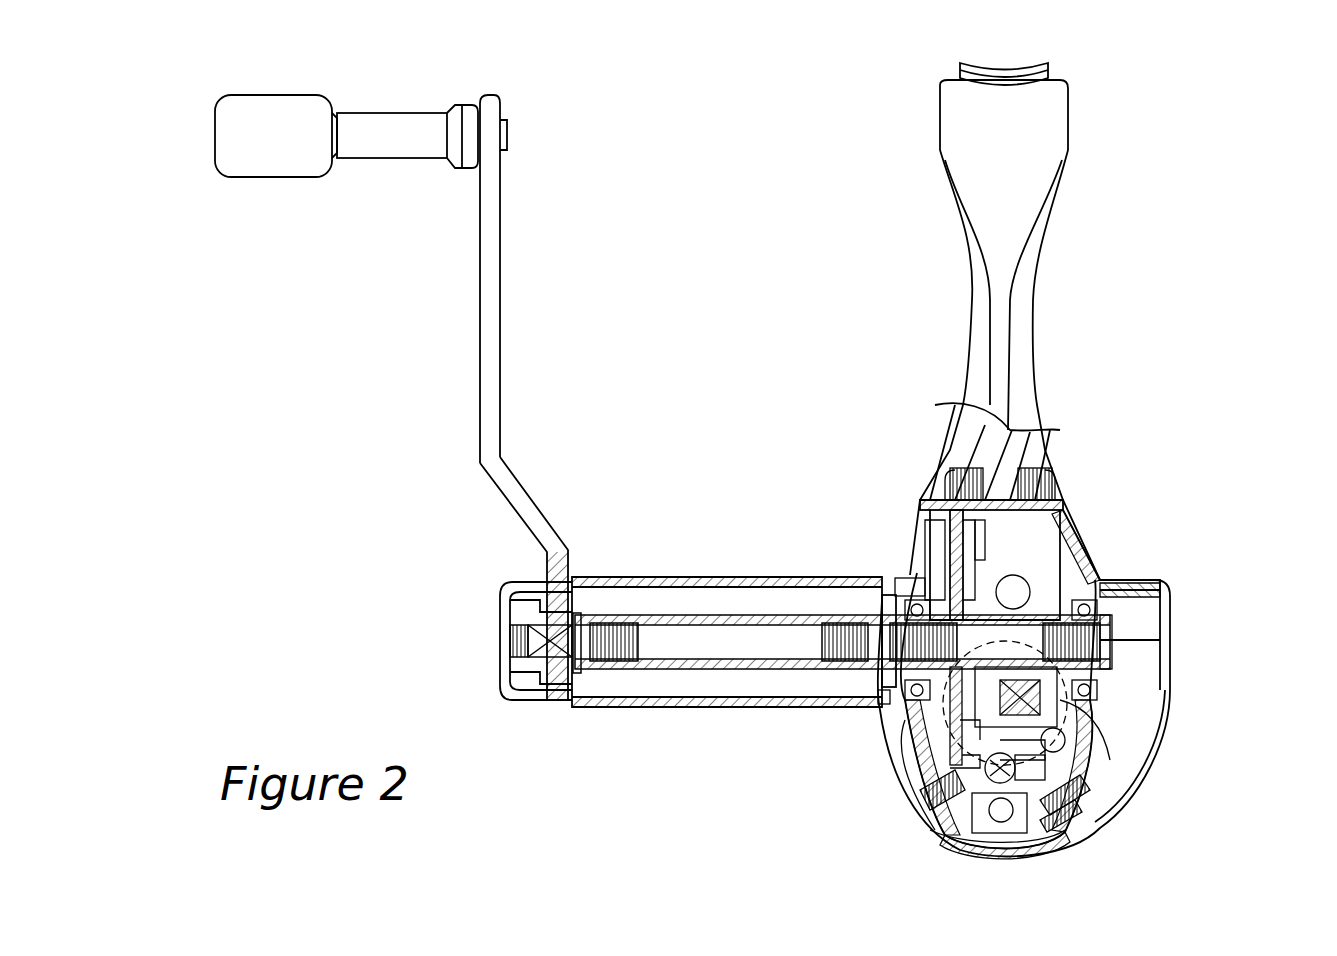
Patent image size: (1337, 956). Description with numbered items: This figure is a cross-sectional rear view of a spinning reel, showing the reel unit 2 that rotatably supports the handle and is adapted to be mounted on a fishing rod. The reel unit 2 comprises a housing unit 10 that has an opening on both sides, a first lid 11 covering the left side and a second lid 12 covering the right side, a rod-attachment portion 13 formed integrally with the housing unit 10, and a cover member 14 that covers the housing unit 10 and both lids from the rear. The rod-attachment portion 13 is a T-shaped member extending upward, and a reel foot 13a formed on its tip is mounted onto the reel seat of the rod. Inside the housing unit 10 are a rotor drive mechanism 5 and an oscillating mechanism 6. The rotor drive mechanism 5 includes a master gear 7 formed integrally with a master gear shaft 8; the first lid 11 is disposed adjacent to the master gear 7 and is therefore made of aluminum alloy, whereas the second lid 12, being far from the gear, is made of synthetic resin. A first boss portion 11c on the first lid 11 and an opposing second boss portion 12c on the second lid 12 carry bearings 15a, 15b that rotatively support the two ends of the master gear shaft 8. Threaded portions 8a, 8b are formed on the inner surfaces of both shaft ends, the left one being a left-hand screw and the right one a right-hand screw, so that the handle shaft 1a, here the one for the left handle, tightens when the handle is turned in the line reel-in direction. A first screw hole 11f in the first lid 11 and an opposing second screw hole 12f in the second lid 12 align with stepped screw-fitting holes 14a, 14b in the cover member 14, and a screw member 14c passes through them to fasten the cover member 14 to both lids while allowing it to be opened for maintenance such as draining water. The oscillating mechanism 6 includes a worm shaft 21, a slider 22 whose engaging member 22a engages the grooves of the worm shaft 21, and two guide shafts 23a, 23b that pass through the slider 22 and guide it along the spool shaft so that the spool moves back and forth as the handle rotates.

The handle shaft 1a is at (690, 615).
The reel unit 2 is at (1047, 382).
The rotor drive mechanism 5 is at (925, 525).
The oscillating mechanism 6 is at (1095, 758).
The master gear 7 is at (928, 538).
The master gear shaft 8 is at (1040, 598).
The threaded portion 8a is at (880, 702).
The threaded portion 8b is at (1100, 645).
The housing unit 10 is at (945, 845).
The first lid 11 is at (945, 515).
The first boss portion 11c is at (912, 578).
The first screw hole 11f is at (955, 755).
The second lid 12 is at (1060, 525).
The second boss portion 12c is at (1100, 580).
The second screw hole 12f is at (1090, 850).
The rod-attachment portion 13 is at (1010, 331).
The reel foot 13a is at (1012, 80).
The cover member 14 is at (1170, 697).
The screw-fitting hole 14a is at (930, 815).
The screw-fitting hole 14b is at (1105, 838).
The screw member 14c is at (920, 808).
The bearing 15a is at (905, 572).
The bearing 15b is at (1160, 598).
The worm shaft 21 is at (1000, 745).
The slider 22 is at (1100, 772).
The engaging member 22a is at (960, 728).
The guide shaft 23a is at (1100, 715).
The guide shaft 23b is at (935, 850).